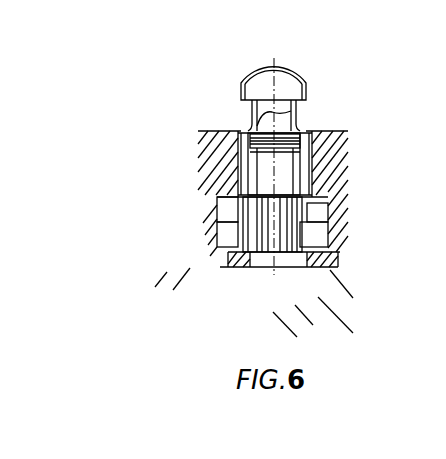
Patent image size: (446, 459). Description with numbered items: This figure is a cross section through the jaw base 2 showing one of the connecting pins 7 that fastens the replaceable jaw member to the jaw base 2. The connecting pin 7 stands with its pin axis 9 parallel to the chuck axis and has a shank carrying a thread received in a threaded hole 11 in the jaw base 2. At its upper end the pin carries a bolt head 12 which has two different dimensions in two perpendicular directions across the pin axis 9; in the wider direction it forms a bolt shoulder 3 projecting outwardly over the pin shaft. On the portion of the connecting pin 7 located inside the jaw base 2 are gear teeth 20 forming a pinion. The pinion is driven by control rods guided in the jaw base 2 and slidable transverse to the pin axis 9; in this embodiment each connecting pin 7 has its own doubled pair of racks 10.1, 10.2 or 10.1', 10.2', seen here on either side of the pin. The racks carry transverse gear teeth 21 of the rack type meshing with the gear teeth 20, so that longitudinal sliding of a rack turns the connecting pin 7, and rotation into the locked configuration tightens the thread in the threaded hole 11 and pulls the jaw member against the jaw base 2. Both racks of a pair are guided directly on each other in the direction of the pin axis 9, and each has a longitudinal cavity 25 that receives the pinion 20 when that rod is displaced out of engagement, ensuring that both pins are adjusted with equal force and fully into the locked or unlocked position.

The jaw base 2 is at (417, 222).
The bolt shoulder 3 is at (241, 89).
The connecting pin 7 is at (256, 113).
The pin axis 9 is at (291, 114).
The rack 10.1 is at (349, 201).
The rack 10.2 is at (349, 236).
The rack 10.1' is at (200, 214).
The rack 10.2' is at (199, 248).
The threaded hole 11 is at (241, 159).
The bolt head 12 is at (279, 72).
The gear teeth 20 is at (257, 268).
The transverse gear teeth 21 is at (240, 259).
The longitudinal cavity 25 is at (238, 189).